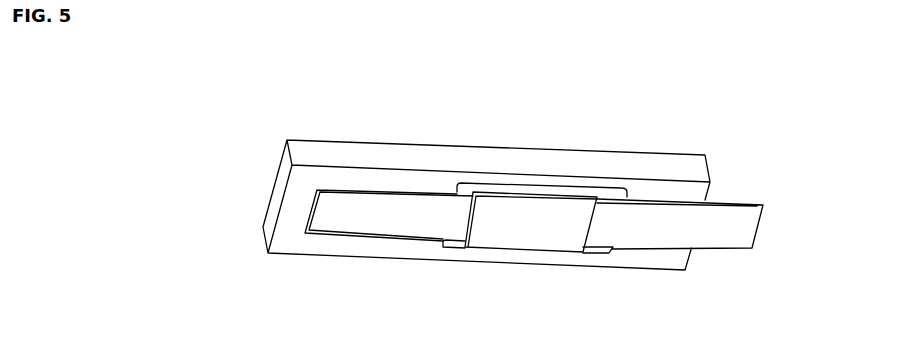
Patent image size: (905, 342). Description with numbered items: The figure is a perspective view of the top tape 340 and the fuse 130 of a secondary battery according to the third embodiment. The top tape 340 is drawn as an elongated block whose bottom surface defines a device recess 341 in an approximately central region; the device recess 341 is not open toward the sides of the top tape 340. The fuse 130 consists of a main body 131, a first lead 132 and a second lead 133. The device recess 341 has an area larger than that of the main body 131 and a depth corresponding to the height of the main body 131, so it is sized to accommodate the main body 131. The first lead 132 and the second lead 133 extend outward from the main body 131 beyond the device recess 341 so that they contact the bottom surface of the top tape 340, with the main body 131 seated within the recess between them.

The fuse 130 is at (649, 101).
The main body 131 is at (528, 217).
The first lead 132 is at (435, 210).
The second lead 133 is at (632, 228).
The top tape 340 is at (713, 148).
The device recess 341 is at (453, 248).